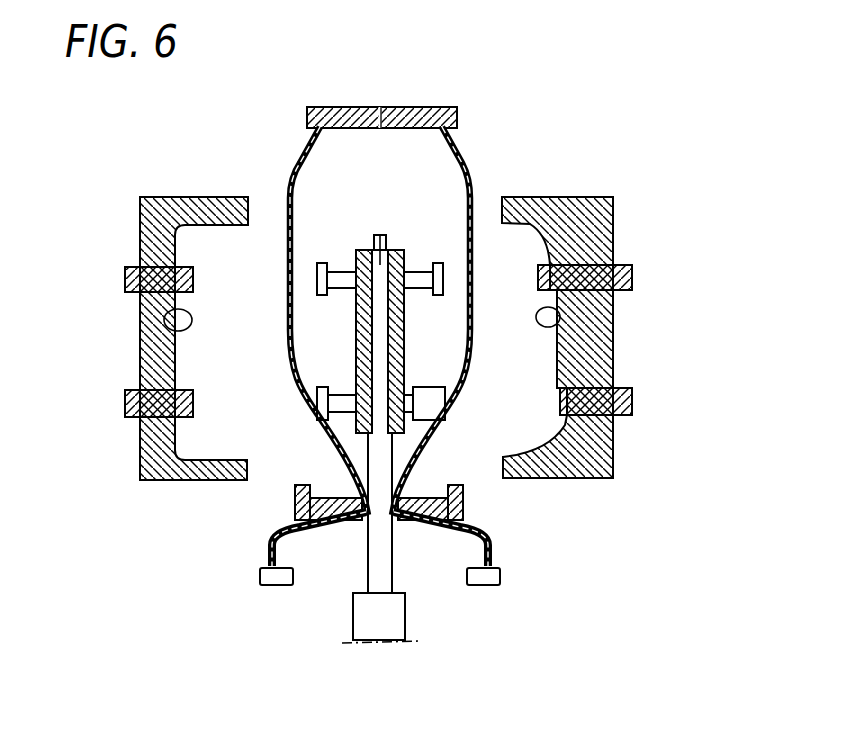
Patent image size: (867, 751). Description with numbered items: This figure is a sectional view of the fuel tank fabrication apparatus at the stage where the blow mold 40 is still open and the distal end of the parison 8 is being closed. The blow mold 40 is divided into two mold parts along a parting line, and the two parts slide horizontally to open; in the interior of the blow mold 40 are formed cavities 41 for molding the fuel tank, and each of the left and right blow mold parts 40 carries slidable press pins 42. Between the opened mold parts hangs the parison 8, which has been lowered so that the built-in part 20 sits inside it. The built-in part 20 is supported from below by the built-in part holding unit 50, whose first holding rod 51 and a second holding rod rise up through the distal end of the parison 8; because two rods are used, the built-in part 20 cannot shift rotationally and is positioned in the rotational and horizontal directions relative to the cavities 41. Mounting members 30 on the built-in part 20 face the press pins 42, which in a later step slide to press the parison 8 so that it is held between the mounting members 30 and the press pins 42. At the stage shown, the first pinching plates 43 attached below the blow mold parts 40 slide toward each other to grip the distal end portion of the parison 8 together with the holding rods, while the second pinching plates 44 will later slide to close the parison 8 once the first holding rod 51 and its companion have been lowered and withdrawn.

The parison 8 is at (460, 150).
The built-in part 20 is at (355, 352).
The mounting member 30 is at (320, 265).
The blow mold 40 is at (124, 209).
The cavity 41 is at (160, 306).
The press pin 42 is at (125, 280).
The first pinching plate 43 is at (463, 510).
The second pinching plate 44 is at (297, 491).
The built-in part holding unit 50 is at (333, 610).
The first holding rod 51 is at (378, 556).